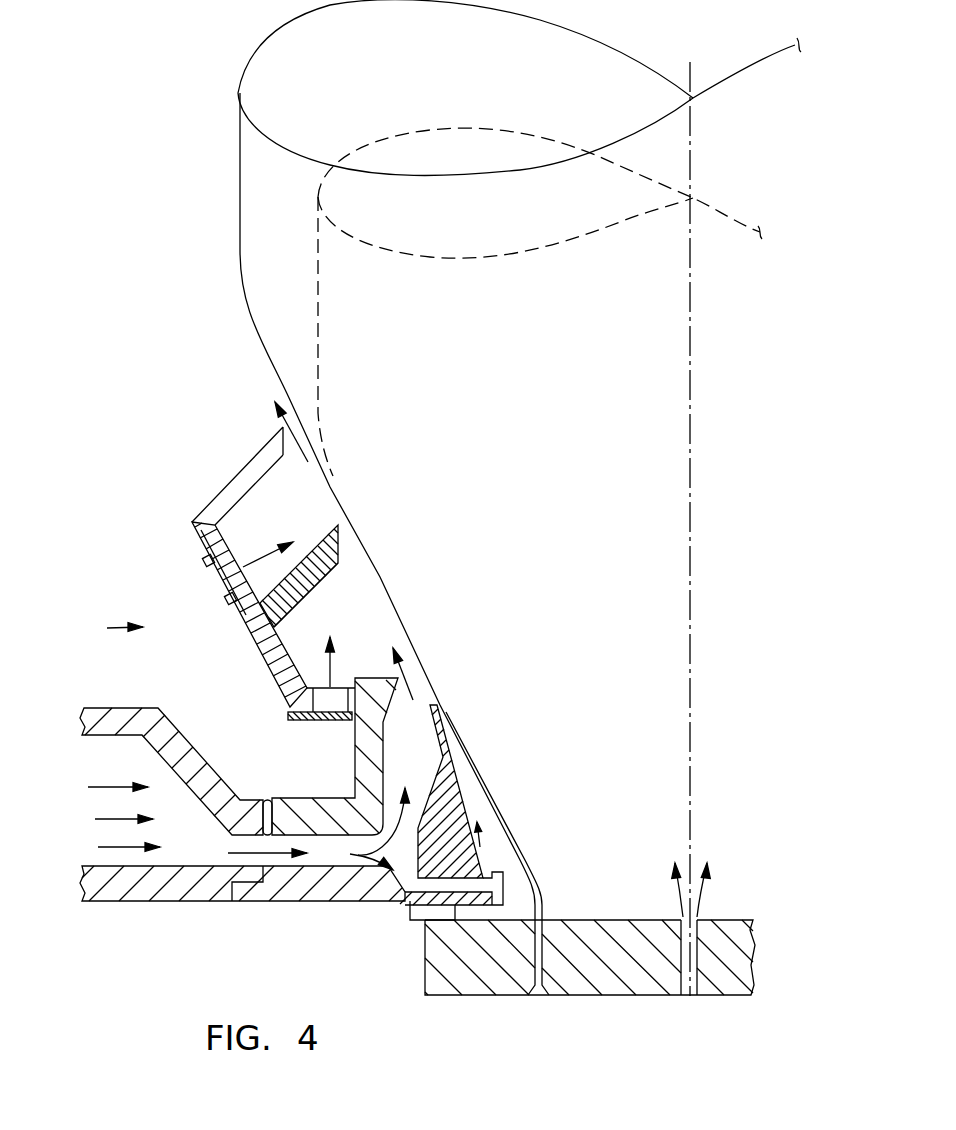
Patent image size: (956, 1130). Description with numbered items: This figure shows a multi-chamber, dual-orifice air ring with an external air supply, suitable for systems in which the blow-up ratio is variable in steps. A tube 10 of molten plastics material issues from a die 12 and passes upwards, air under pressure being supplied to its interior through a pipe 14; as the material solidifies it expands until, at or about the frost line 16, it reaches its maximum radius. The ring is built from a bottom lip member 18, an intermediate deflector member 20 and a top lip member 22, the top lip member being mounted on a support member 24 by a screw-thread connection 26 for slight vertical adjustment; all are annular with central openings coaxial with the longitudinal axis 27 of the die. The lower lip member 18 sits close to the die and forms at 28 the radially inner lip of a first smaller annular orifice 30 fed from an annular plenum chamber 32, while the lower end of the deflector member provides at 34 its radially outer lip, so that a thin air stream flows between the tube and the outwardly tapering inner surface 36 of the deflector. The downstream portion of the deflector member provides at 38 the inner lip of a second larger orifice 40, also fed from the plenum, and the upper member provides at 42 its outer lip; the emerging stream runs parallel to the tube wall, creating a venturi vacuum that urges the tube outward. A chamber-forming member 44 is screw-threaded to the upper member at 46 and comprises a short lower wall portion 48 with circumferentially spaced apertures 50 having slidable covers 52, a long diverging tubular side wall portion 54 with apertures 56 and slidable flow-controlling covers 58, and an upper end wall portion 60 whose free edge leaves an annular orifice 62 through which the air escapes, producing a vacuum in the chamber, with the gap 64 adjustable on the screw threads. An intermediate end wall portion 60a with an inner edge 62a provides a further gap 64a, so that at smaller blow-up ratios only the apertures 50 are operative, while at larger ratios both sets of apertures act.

The tube 10 is at (361, 537).
The die 12 is at (452, 973).
The pipe 14 is at (695, 918).
The frost line 16 is at (510, 175).
The bottom lip member 18 is at (294, 893).
The intermediate deflector member 20 is at (445, 793).
The top lip member 22 is at (323, 808).
The support member 24 is at (198, 763).
The screw-thread connection 26 is at (263, 803).
The longitudinal axis 27 is at (690, 440).
The radially inner lip of the first orifice 28 is at (493, 878).
The first smaller annular orifice 30 is at (486, 866).
The annular plenum chamber 32 is at (172, 815).
The radially outer lip of the first orifice 34 is at (498, 893).
The inner surface of the deflector member 36 is at (468, 817).
The radially inner lip of the second orifice 38 is at (432, 702).
The second larger orifice 40 is at (423, 700).
The radially outer lip of the second orifice 42 is at (415, 715).
The chamber-forming member 44 is at (110, 630).
The screw threads 46 is at (356, 730).
The lower wall portion 48 is at (350, 687).
The apertures 50 is at (323, 688).
The slidable cover 52 is at (292, 720).
The tubular side wall portion 54 is at (268, 647).
The apertures 56 is at (225, 575).
The slidable flow-controlling cover 58 is at (230, 602).
The upper end wall portion 60 is at (230, 490).
The intermediate end wall portion 60a is at (340, 562).
The annular orifice 62 is at (283, 427).
The inner edge of the intermediate end wall portion 62a is at (338, 527).
The gap 64 is at (297, 428).
The gap 64a is at (348, 537).